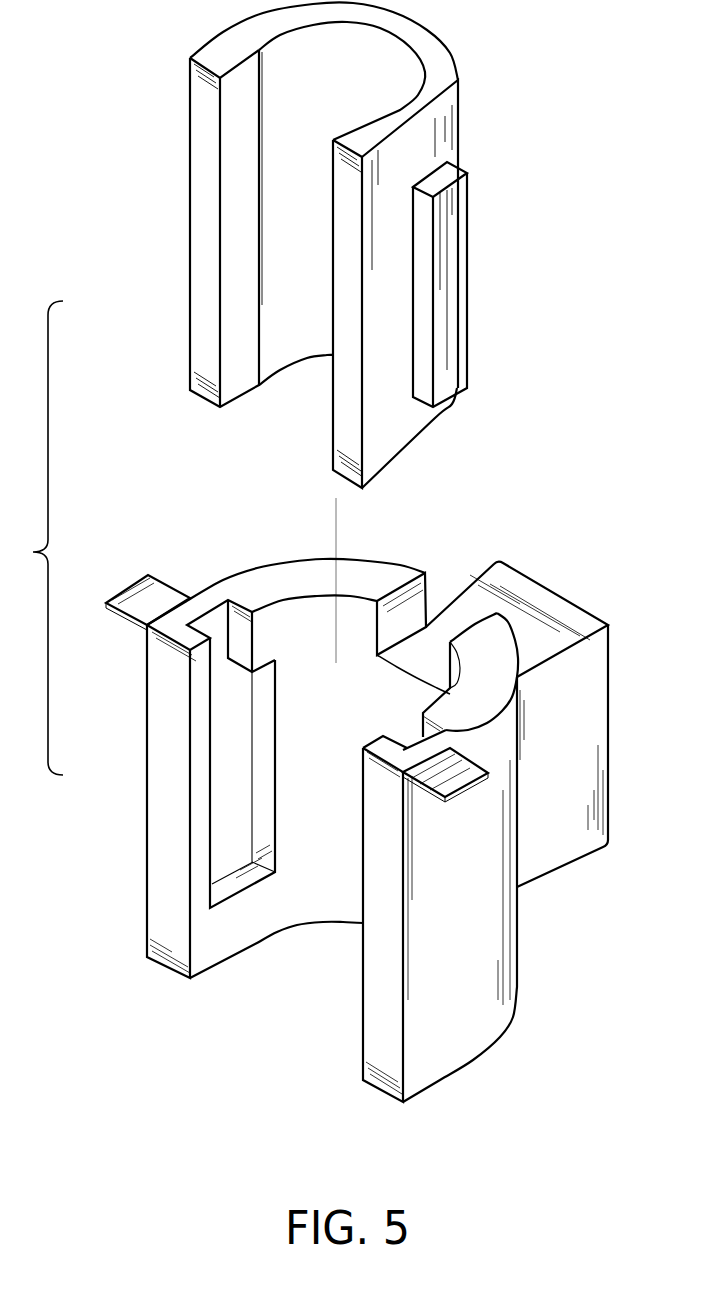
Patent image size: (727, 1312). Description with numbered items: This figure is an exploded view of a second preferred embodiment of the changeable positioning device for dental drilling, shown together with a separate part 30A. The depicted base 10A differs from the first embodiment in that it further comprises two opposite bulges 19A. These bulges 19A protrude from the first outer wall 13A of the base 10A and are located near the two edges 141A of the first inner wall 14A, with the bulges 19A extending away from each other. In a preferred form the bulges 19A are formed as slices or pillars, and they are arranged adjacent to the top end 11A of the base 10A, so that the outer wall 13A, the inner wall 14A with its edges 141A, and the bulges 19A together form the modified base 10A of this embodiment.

The base 10A is at (197, 521).
The top end 11A is at (310, 572).
The first outer wall 13A is at (493, 970).
The first inner wall 14A is at (363, 608).
The bulges 19A is at (463, 788).
The block 30A is at (557, 590).
The edges 141A is at (190, 948).